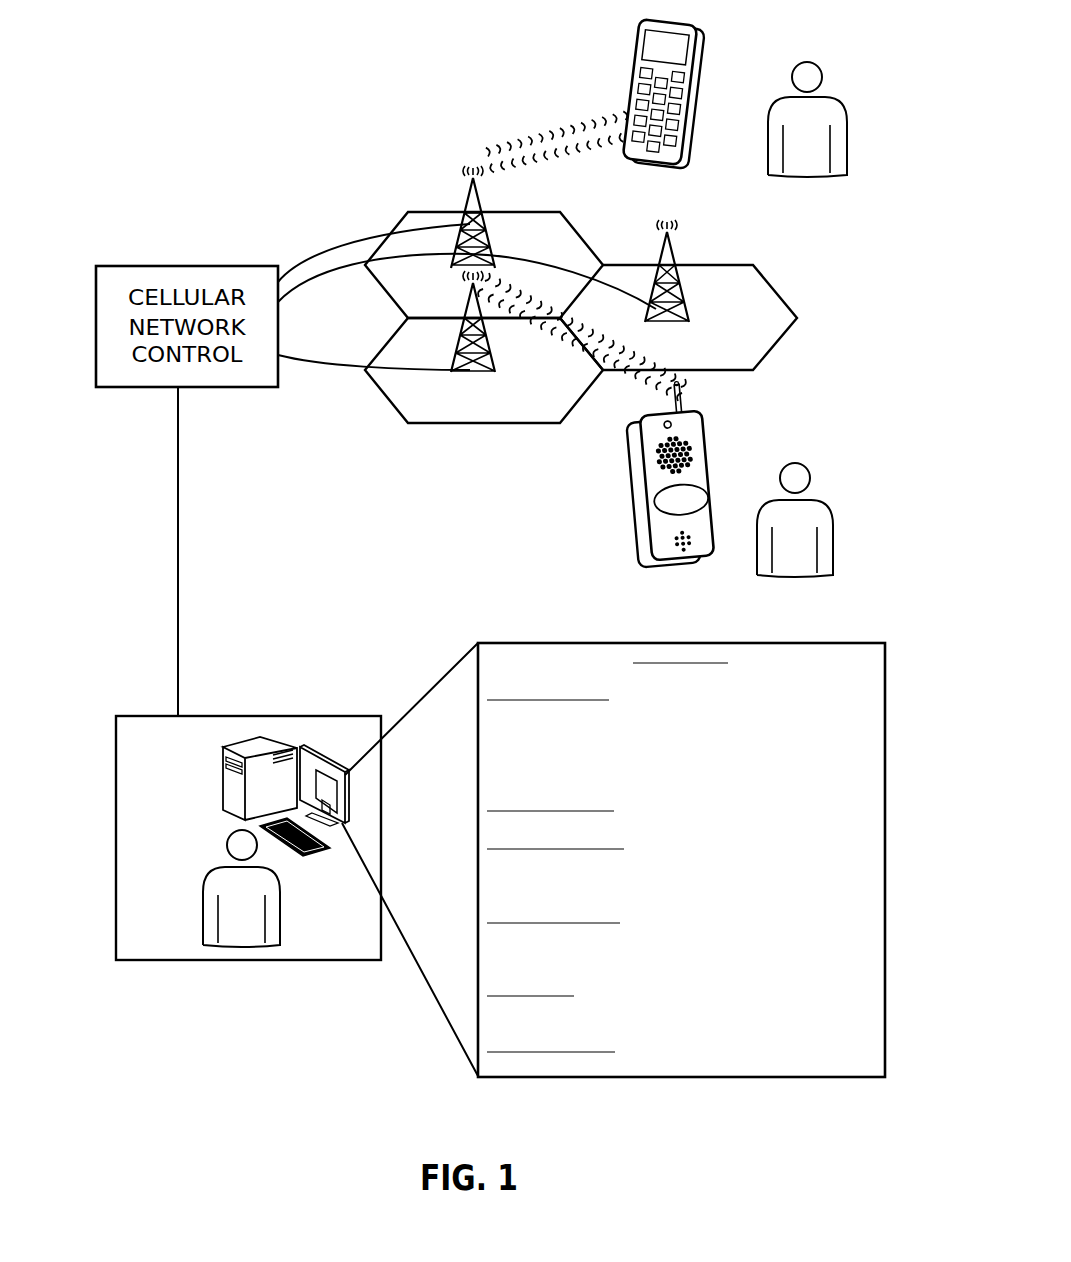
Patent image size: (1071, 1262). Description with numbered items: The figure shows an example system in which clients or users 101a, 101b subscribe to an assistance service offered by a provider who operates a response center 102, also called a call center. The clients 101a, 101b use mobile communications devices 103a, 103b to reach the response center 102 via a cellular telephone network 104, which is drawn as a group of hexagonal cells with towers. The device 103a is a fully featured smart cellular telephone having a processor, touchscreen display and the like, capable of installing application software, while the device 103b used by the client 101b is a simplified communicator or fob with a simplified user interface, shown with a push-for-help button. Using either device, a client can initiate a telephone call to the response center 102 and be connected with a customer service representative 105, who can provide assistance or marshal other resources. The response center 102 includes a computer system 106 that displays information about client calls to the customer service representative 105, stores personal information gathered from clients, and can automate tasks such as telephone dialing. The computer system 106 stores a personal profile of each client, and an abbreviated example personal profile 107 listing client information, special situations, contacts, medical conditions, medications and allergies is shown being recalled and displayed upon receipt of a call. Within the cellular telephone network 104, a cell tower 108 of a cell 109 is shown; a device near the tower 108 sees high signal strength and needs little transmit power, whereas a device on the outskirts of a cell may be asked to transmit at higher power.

The client 101a is at (820, 117).
The client 101b is at (817, 515).
The response center 102 is at (138, 730).
The mobile communications device 103a is at (627, 63).
The mobile communications device 103b is at (637, 503).
The cellular telephone network 104 is at (322, 213).
The customer service representative 105 is at (212, 887).
The computer system 106 is at (267, 747).
The personal profile 107 is at (525, 655).
The cell tower 108 is at (467, 367).
The cell 109 is at (403, 395).